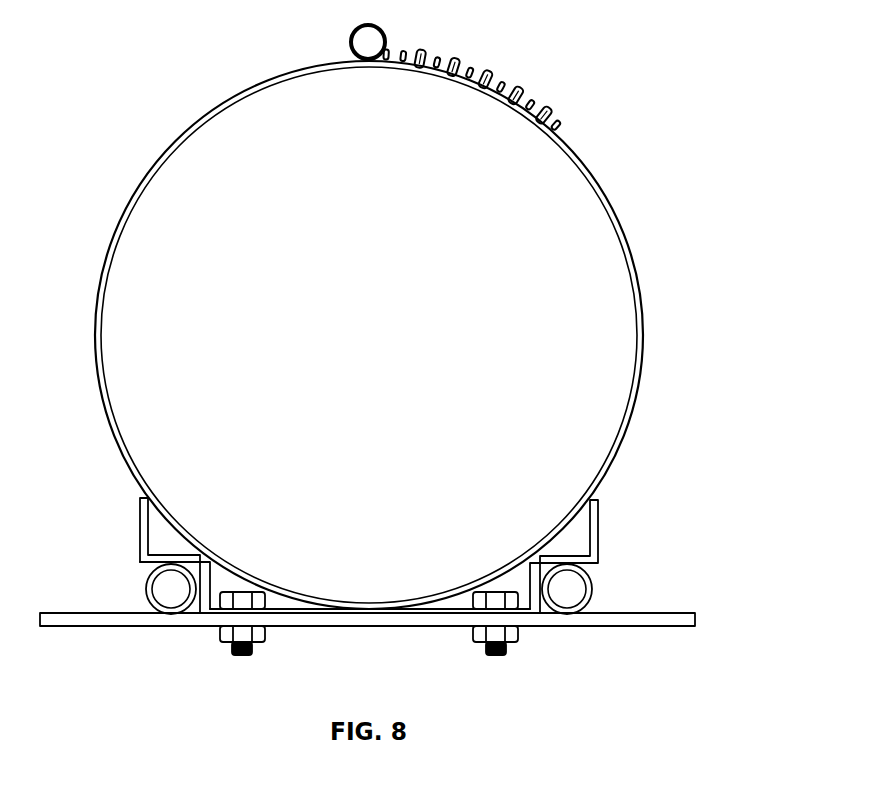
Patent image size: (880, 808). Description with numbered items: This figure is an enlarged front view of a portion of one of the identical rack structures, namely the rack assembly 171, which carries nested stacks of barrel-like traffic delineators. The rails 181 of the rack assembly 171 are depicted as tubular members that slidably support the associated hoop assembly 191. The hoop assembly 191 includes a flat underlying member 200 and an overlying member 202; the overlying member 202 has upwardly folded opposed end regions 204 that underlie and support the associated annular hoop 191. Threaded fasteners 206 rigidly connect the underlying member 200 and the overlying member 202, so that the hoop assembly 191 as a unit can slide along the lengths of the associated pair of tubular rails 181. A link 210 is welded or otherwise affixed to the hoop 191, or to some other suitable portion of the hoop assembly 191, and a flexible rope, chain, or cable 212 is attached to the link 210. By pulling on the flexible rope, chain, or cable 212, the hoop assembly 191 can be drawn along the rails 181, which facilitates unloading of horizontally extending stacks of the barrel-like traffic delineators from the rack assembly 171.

The rack assembly 171 is at (656, 140).
The hoop assembly 191 is at (643, 325).
The link 210 is at (378, 26).
The flexible rope, chain, or cable 212 is at (460, 58).
The upwardly folded opposed end regions 204 is at (140, 530).
The overlying member 202 is at (288, 608).
The rails 181 is at (147, 587).
The flat underlying member 200 is at (627, 628).
The threaded fasteners 206 is at (253, 652).